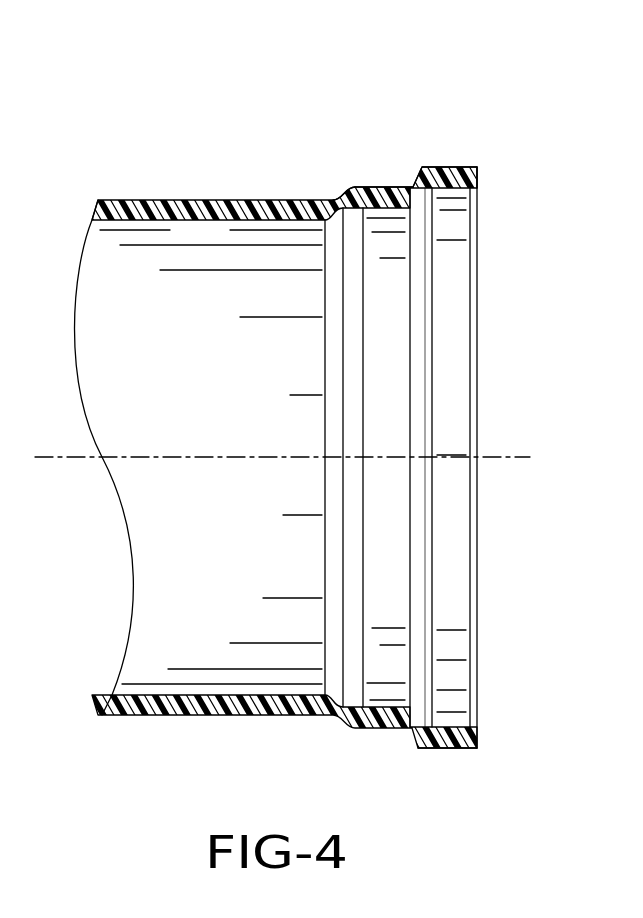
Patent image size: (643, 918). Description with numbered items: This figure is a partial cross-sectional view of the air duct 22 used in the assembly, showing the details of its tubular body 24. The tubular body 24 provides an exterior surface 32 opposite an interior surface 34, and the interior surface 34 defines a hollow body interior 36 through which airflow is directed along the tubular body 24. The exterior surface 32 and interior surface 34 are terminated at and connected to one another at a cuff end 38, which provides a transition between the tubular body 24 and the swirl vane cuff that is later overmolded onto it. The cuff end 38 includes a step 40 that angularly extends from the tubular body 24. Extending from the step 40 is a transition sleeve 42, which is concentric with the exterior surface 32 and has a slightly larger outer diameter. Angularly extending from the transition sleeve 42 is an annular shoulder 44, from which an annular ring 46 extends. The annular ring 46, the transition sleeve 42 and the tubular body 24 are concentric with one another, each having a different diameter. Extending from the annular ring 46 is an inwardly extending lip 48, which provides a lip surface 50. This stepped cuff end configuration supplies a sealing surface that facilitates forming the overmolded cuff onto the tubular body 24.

The air duct 22 is at (512, 120).
The tubular body 24 is at (233, 160).
The exterior surface 32 is at (188, 200).
The interior surface 34 is at (218, 222).
The hollow body interior 36 is at (300, 350).
The cuff end 38 is at (425, 132).
The step 40 is at (347, 199).
The transition sleeve 42 is at (380, 187).
The annular shoulder 44 is at (413, 732).
The annular ring 46 is at (440, 747).
The inwardly extending lip 48 is at (475, 735).
The lip surface 50 is at (475, 723).